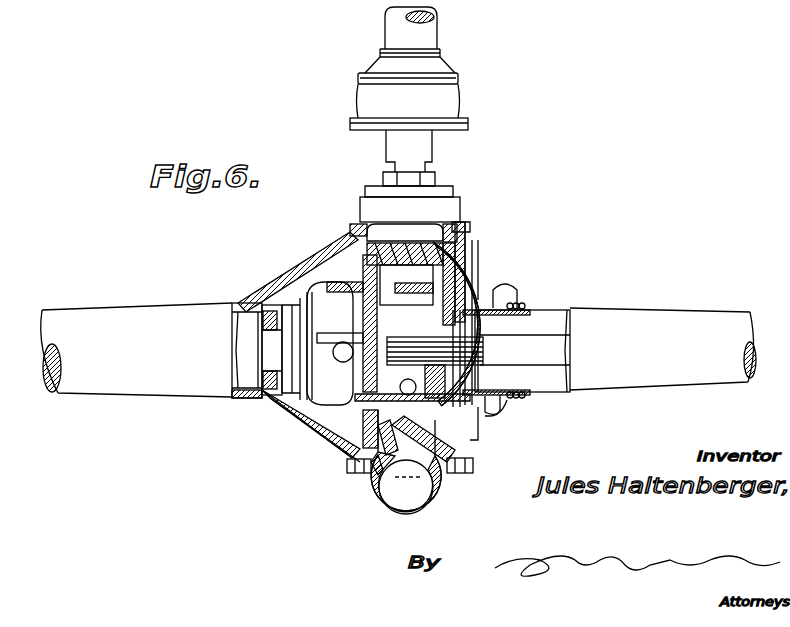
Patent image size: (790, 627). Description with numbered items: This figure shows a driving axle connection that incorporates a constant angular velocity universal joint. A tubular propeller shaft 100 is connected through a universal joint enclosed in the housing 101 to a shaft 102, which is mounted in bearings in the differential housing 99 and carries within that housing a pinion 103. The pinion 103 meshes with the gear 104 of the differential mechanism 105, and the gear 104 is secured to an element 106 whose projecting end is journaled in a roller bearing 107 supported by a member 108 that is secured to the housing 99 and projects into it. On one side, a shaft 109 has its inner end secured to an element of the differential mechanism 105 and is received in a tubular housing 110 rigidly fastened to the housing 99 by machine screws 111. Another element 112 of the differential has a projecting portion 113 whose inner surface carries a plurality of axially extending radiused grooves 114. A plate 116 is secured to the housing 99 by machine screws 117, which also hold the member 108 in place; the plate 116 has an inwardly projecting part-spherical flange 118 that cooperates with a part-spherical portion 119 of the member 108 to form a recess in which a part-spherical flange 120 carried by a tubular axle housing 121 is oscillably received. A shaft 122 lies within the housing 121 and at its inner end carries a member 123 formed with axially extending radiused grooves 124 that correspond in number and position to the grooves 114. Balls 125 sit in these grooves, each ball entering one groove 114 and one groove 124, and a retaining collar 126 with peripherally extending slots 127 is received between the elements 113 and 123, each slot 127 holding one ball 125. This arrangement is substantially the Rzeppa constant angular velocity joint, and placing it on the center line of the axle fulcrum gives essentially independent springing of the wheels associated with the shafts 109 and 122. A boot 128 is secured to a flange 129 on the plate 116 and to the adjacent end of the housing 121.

The differential housing 99 is at (460, 198).
The tubular propeller shaft 100 is at (408, 37).
The housing 101 is at (437, 98).
The shaft 102 is at (422, 164).
The pinion 103 is at (352, 249).
The gear 104 is at (362, 432).
The differential mechanism 105 is at (292, 372).
The element 106 is at (392, 416).
The roller bearing 107 is at (473, 313).
The member 108 is at (465, 457).
The shaft 109 is at (247, 357).
The tubular housing 110 is at (110, 380).
The machine screws 111 is at (348, 467).
The element 112 is at (330, 398).
The projecting portion 113 is at (316, 322).
The radiused grooves 114 is at (373, 435).
The plate 116 is at (480, 236).
The machine screws 117 is at (464, 227).
The part-spherical flange 118 is at (410, 209).
The part-spherical portion 119 is at (418, 412).
The part-spherical flange 120 is at (473, 305).
The tubular axle housing 121 is at (640, 378).
The shaft 122 is at (553, 345).
The member 123 is at (480, 412).
The radiused grooves 124 is at (268, 322).
The balls 125 is at (462, 268).
The retaining collar 126 is at (350, 333).
The slots 127 is at (455, 250).
The boot 128 is at (503, 413).
The flange 129 is at (480, 283).